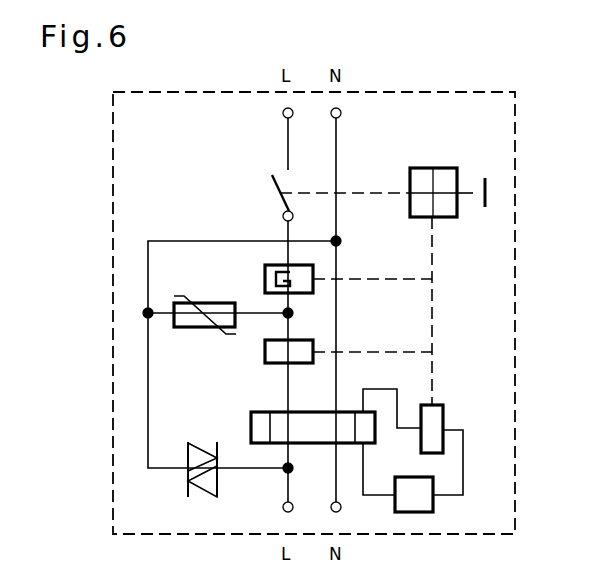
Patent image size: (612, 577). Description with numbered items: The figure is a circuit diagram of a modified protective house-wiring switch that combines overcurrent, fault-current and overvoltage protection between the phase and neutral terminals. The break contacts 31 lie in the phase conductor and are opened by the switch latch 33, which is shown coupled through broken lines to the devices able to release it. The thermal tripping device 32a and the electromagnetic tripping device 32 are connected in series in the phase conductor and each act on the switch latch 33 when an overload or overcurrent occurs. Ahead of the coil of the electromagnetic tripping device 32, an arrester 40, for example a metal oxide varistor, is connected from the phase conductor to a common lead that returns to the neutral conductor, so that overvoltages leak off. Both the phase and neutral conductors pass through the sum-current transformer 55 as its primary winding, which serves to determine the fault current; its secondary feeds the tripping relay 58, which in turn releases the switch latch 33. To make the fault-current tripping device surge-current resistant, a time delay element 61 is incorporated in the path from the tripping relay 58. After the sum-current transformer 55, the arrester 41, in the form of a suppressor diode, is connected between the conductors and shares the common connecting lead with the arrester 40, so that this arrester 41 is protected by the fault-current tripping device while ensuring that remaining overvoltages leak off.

The break contacts 31 is at (278, 172).
The switch latch 33 is at (447, 178).
The thermal tripping device 32a is at (303, 277).
The electromagnetic tripping device 32 is at (312, 347).
The arrester 40 is at (187, 318).
The sum-current transformer 55 is at (251, 427).
The tripping relay 58 is at (443, 417).
The time delay element 61 is at (433, 505).
The arrester 41 is at (207, 492).